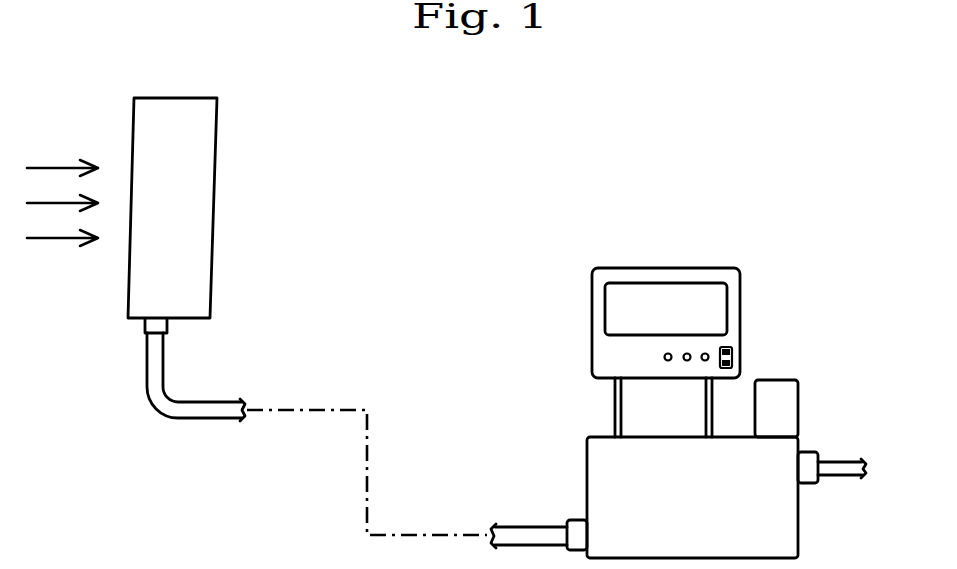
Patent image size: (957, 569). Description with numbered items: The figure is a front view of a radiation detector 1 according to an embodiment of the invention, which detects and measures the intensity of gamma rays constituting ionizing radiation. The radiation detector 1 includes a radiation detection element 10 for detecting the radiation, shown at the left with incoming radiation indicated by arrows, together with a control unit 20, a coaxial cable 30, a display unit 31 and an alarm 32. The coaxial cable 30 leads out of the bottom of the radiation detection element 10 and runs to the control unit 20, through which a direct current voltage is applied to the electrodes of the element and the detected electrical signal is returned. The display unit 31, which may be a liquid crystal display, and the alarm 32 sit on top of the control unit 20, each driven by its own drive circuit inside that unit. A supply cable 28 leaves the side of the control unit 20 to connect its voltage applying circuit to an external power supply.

The radiation detector 1 is at (421, 152).
The radiation detection element 10 is at (249, 101).
The control unit 20 is at (587, 459).
The supply cable 28 is at (840, 477).
The coaxial cable 30 is at (200, 400).
The display unit 31 is at (742, 301).
The alarm 32 is at (799, 392).